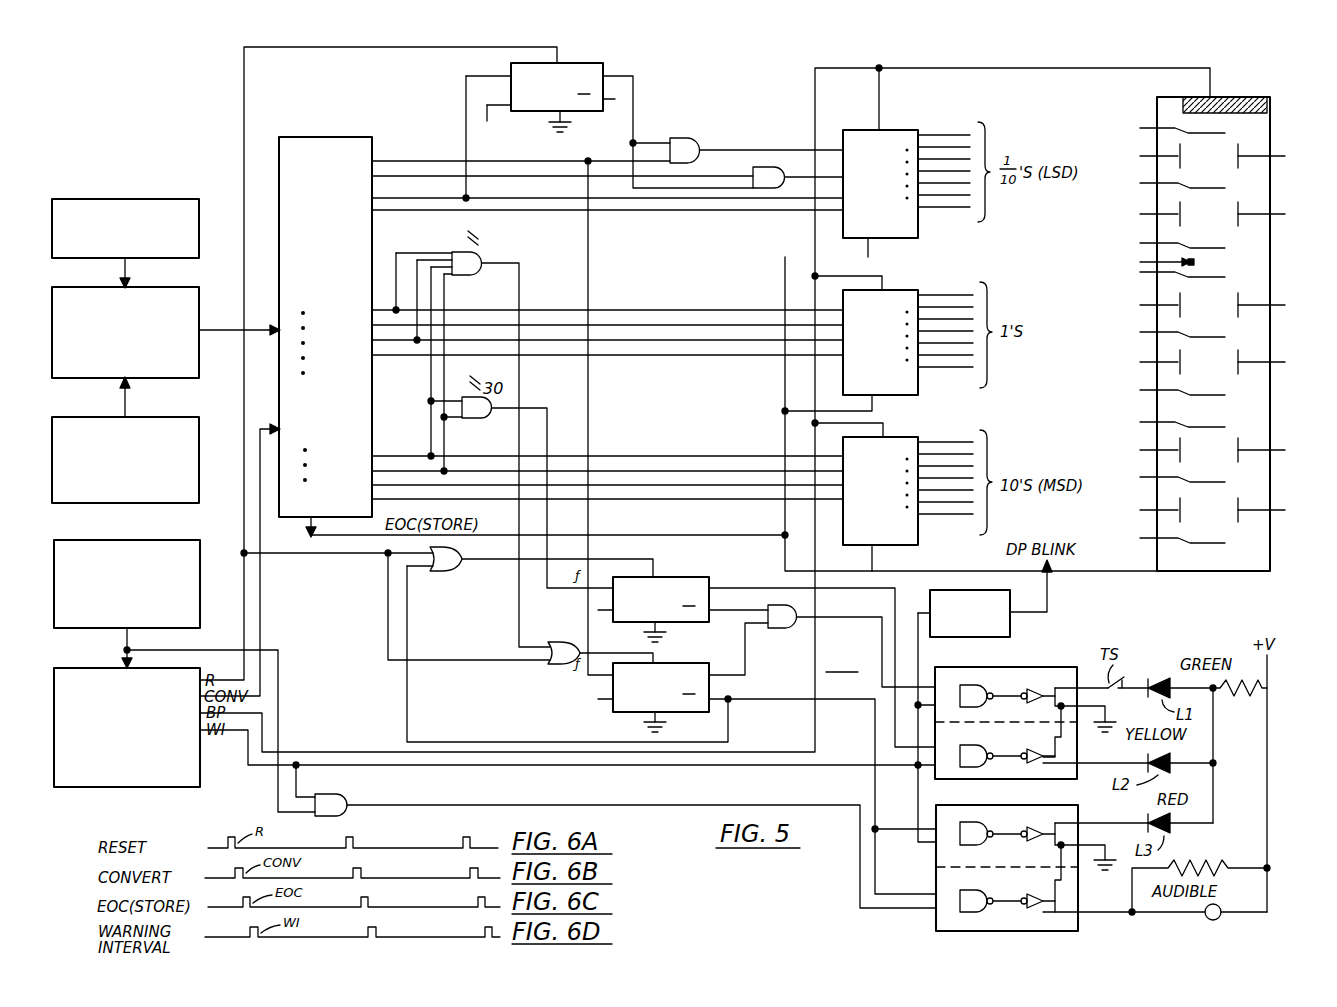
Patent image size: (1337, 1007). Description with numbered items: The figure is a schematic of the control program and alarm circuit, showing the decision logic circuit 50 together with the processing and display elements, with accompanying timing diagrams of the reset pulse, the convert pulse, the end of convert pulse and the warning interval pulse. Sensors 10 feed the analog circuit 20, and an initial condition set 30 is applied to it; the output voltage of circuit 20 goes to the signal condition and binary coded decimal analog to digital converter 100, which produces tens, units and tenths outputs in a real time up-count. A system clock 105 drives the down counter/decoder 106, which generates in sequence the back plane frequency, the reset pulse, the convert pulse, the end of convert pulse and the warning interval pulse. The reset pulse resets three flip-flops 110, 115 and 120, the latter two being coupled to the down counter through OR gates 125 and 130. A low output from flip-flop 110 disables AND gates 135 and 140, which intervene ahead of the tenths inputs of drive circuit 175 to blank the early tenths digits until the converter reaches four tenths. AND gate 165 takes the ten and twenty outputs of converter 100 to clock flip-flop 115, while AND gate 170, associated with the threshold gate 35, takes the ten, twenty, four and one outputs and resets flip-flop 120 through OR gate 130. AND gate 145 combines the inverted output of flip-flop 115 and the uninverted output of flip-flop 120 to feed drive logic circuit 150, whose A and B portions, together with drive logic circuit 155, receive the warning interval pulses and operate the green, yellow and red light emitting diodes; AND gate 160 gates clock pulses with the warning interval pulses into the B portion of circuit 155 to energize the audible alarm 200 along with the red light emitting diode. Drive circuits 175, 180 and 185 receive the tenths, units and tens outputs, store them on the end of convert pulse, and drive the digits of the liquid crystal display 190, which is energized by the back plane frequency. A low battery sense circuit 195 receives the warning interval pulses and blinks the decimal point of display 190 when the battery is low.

The sensors 10 is at (163, 199).
The circuit 20 is at (176, 287).
The initial condition set 30 is at (178, 417).
The threshold gate 35 is at (484, 242).
The decision logic circuit 50 is at (842, 662).
The signal condition and binary coded decimal analog to digital converter 100 is at (333, 137).
The system clock 105 is at (108, 538).
The down counter/decoder 106 is at (106, 667).
The flip-flop 110 is at (590, 63).
The flip-flop 115 is at (688, 577).
The flip-flop 120 is at (676, 663).
The OR gate 125 is at (445, 571).
The OR gate 130 is at (545, 667).
The AND gate 135 is at (690, 138).
The AND gate 140 is at (788, 148).
The AND gate 145 is at (790, 628).
The drive logic circuit 150 is at (1018, 667).
The drive logic circuit 155 is at (1018, 805).
The AND gate 160 is at (340, 794).
The AND gate 165 is at (472, 418).
The AND gate 170 is at (462, 275).
The drive circuit 175 is at (896, 130).
The drive circuit 180 is at (896, 290).
The drive circuit 185 is at (898, 437).
The liquid crystal display 190 is at (1272, 135).
The low battery sense circuit 195 is at (980, 588).
The audible alarm 200 is at (1208, 920).